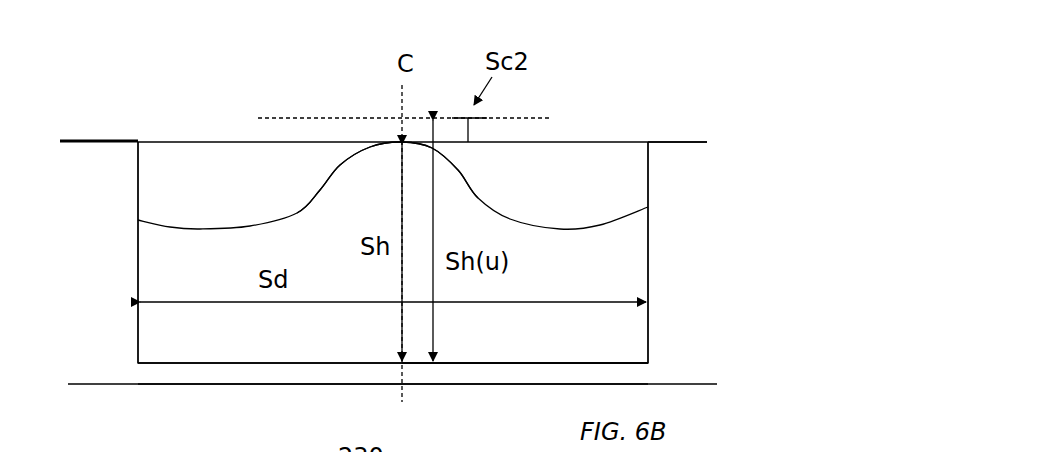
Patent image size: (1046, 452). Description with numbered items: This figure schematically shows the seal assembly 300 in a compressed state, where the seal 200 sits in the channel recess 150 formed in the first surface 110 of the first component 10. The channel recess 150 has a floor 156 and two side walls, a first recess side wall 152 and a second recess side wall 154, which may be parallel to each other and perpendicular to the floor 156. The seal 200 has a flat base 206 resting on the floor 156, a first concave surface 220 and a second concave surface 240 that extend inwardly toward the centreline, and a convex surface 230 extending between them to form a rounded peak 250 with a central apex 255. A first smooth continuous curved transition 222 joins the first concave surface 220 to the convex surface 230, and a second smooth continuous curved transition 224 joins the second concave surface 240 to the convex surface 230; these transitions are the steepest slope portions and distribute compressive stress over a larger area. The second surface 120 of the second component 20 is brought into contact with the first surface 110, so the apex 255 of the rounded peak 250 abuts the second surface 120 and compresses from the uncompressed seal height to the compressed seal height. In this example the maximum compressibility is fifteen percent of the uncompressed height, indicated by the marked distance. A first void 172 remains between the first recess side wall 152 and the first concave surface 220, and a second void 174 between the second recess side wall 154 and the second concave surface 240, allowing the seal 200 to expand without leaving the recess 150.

The first component 10 is at (102, 358).
The second component 20 is at (72, 127).
The first surface 110 is at (100, 141).
The second surface 120 is at (630, 143).
The channel recess 150 is at (652, 326).
The first recess side wall 152 is at (139, 190).
The second recess side wall 154 is at (648, 177).
The floor 156 is at (574, 360).
The first void 172 is at (229, 192).
The second void 174 is at (548, 202).
The seal 200 is at (230, 343).
The base 206 is at (450, 365).
The first concave surface 220 is at (297, 213).
The first smooth continuous curved transition 222 is at (340, 165).
The second smooth continuous curved transition 224 is at (458, 170).
The convex surface 230 is at (402, 142).
The second concave surface 240 is at (478, 200).
The rounded peak 250 is at (355, 112).
The apex 255 is at (402, 142).
The seal assembly 300 is at (615, 120).